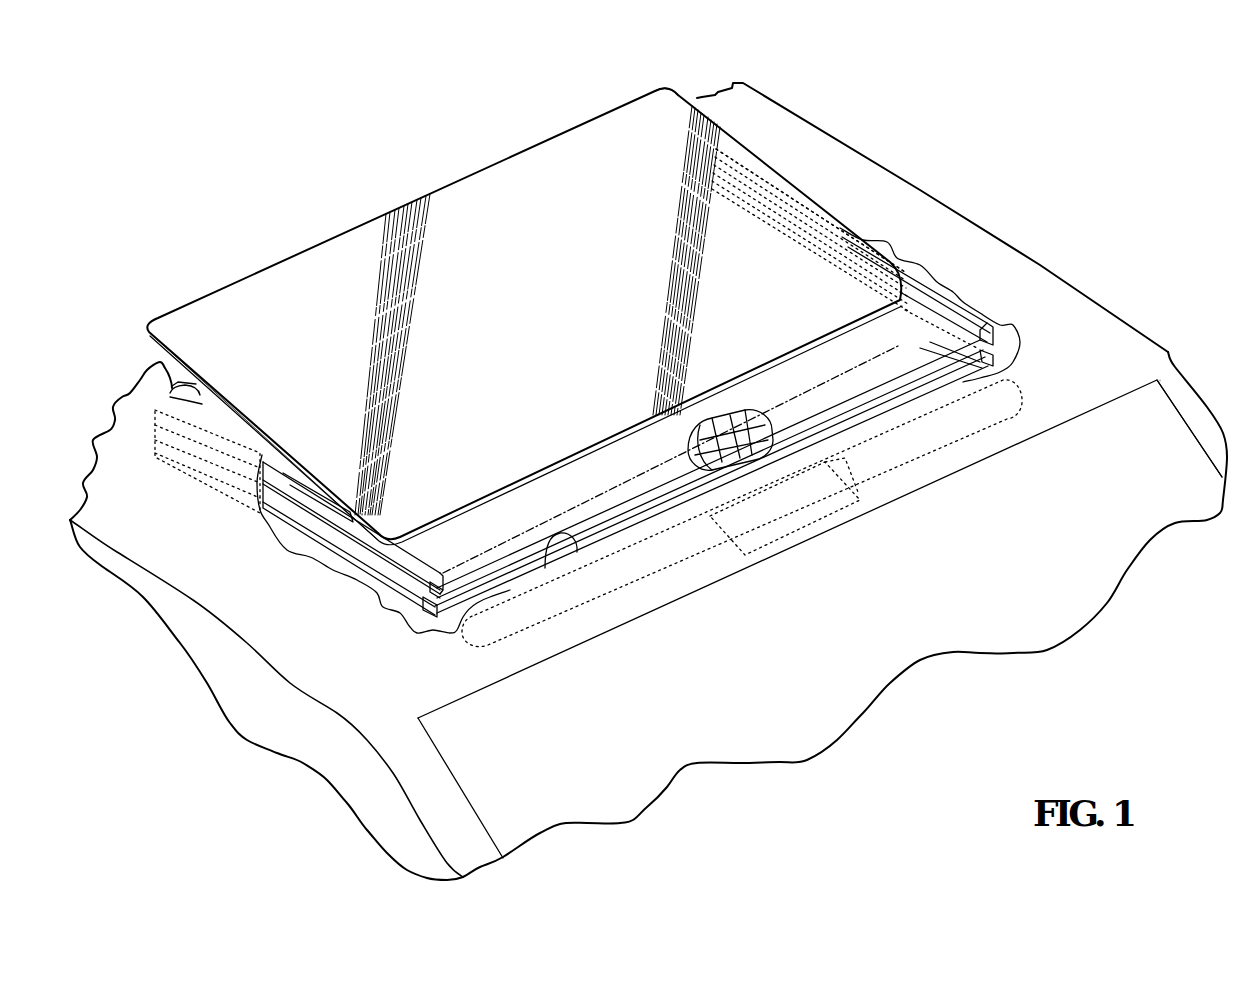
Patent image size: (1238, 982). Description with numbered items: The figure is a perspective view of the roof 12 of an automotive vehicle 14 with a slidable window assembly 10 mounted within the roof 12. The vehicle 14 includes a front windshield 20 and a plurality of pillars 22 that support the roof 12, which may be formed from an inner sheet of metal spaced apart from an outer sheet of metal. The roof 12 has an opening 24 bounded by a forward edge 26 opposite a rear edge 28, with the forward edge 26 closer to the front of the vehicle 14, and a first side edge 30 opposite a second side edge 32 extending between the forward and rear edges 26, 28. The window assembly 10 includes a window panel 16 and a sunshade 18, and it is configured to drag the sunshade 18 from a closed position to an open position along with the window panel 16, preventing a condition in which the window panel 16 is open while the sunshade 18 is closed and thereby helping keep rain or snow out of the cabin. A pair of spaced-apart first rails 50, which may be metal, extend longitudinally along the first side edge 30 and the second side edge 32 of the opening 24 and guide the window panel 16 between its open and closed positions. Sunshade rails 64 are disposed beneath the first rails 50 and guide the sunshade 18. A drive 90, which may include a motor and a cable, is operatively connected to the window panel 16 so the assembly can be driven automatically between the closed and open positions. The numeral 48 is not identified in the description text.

The slidable window assembly 10 is at (547, 132).
The roof 12 is at (958, 250).
The automotive vehicle 14 is at (1150, 305).
The window panel 16 is at (574, 300).
The sunshade 18 is at (855, 367).
The front windshield 20 is at (1042, 578).
The pillars 22 is at (1200, 420).
The opening 24 is at (172, 392).
The forward edge 26 is at (570, 533).
The rear edge 28 is at (204, 385).
The first side edge 30 is at (223, 427).
The second side edge 32 is at (835, 230).
The panel corner 48 is at (647, 147).
The first rails 50 is at (410, 580).
The sunshade rails 64 is at (417, 607).
The drive 90 is at (793, 538).